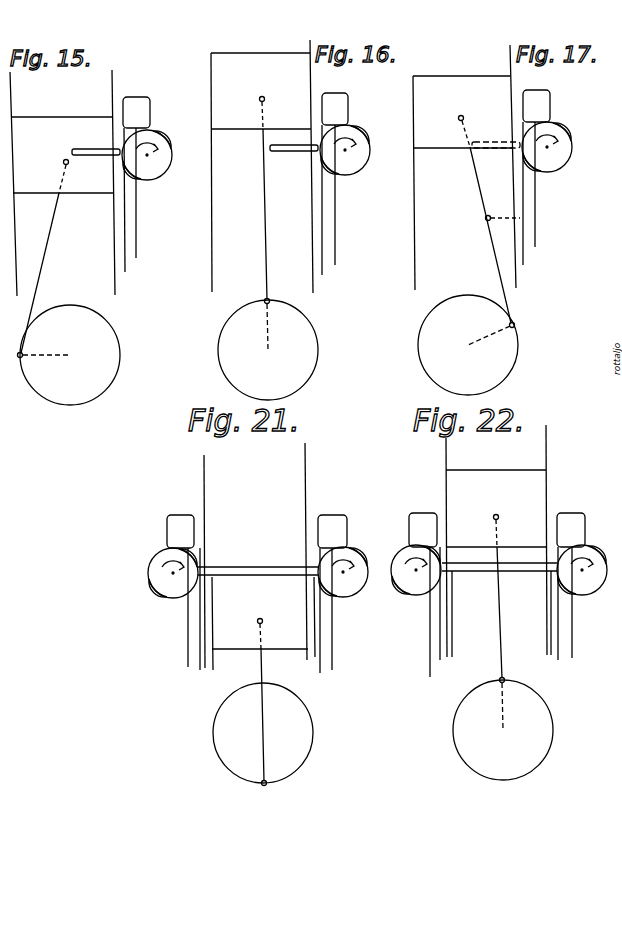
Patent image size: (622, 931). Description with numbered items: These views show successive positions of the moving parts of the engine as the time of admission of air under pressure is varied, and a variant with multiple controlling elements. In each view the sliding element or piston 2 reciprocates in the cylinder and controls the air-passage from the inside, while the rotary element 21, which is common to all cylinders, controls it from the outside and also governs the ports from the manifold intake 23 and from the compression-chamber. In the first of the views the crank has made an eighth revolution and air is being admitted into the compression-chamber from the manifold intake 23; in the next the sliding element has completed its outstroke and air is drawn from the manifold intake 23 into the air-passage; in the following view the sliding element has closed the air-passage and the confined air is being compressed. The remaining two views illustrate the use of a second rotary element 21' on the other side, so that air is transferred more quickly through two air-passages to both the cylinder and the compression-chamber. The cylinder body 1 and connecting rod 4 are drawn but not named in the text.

In FIG. 15, the frame guide 1 is at (62, 183).
In FIG. 16, the frame guide 1 is at (262, 166).
In FIG. 17, the frame guide 1 is at (464, 167).
In FIG. 21, the frame guide 1 is at (259, 556).
In FIG. 22, the frame guide 1 is at (498, 541).
In FIG. 15, the sliding element or piston 2 is at (76, 160).
In FIG. 16, the sliding element or piston 2 is at (289, 114).
In FIG. 17, the sliding element or piston 2 is at (473, 132).
In FIG. 21, the sliding element or piston 2 is at (258, 601).
In FIG. 22, the sliding element or piston 2 is at (499, 531).
In FIG. 15, the connecting rod 4 is at (46, 246).
In FIG. 16, the connecting rod 4 is at (267, 264).
In FIG. 17, the connecting rod 4 is at (492, 245).
In FIG. 21, the connecting rod 4 is at (264, 670).
In FIG. 22, the connecting rod 4 is at (499, 631).
In FIG. 15, the rotary element 21 is at (147, 170).
In FIG. 16, the rotary element 21 is at (345, 164).
In FIG. 17, the rotary element 21 is at (547, 164).
In FIG. 21, the rotary element 21 is at (351, 560).
In FIG. 22, the rotary element 21 is at (582, 588).
In FIG. 21, the rotary element 21' is at (166, 590).
In FIG. 22, the rotary element 21' is at (411, 589).
In FIG. 15, the manifold intake 23 is at (152, 102).
In FIG. 16, the manifold intake 23 is at (353, 105).
In FIG. 17, the manifold intake 23 is at (553, 104).
In FIG. 21, the manifold intake 23 is at (177, 525).
In FIG. 22, the manifold intake 23 is at (497, 595).